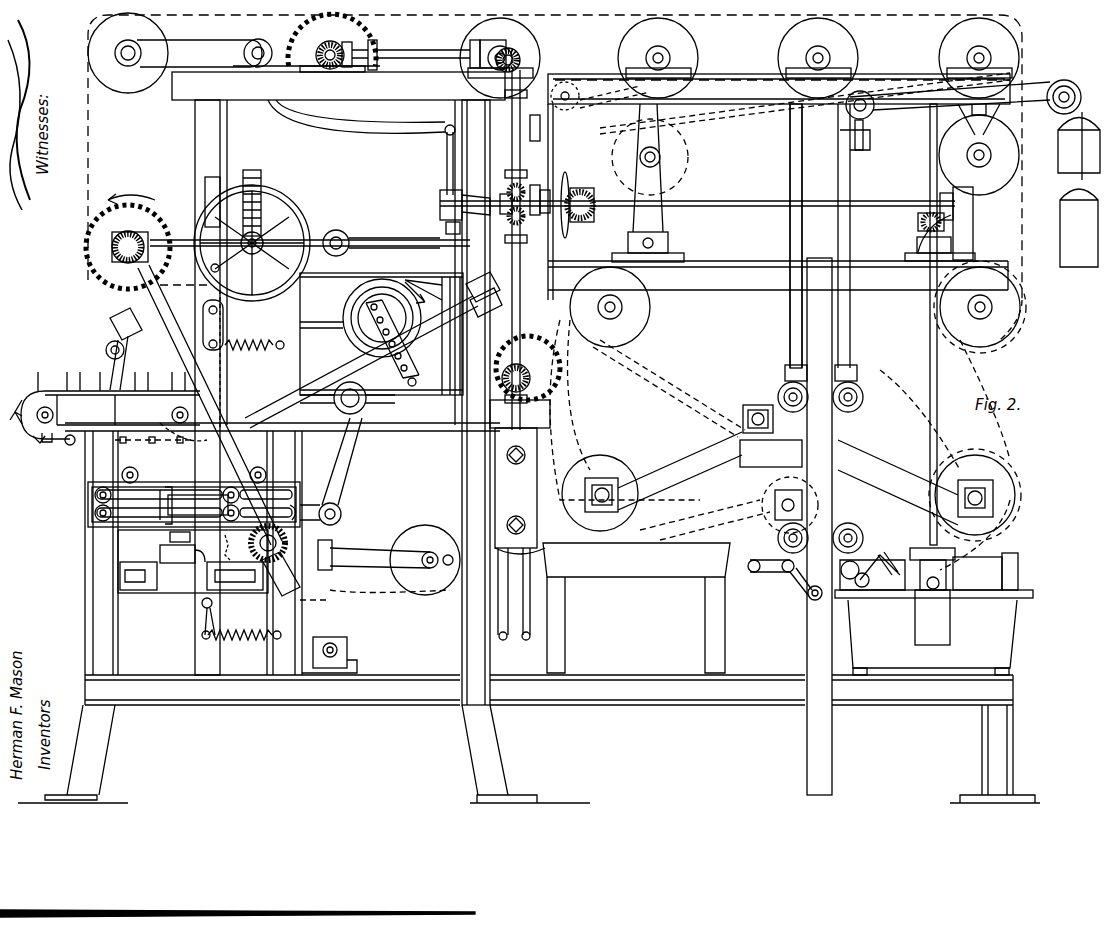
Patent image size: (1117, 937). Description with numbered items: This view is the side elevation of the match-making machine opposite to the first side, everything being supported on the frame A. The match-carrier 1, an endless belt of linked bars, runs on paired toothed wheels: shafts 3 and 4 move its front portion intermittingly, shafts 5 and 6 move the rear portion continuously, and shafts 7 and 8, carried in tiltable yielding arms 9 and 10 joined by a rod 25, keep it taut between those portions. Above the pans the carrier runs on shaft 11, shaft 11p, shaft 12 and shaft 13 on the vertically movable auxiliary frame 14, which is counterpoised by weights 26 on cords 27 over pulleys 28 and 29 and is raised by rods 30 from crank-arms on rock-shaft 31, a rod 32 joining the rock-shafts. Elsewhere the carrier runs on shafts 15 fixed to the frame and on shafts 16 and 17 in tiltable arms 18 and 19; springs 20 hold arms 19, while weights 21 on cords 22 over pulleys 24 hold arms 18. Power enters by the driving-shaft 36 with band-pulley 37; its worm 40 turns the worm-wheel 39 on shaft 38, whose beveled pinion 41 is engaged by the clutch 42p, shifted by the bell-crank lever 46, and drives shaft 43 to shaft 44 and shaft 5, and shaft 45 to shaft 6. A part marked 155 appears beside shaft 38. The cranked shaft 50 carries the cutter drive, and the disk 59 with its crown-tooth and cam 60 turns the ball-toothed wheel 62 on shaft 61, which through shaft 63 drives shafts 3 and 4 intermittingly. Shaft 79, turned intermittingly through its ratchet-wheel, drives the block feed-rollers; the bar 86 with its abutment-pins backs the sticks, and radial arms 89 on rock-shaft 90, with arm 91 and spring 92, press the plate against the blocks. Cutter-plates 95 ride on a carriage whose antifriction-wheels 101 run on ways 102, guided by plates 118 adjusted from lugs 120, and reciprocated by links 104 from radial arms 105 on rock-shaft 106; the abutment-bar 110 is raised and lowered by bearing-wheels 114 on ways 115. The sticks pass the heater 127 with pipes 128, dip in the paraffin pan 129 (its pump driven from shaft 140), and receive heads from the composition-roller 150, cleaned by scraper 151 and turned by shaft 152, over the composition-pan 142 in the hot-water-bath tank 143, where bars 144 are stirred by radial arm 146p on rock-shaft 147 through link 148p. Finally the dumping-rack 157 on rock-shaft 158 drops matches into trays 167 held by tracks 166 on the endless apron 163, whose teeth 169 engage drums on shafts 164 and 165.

The match-carrier 1 is at (110, 140).
The shaft 3 is at (140, 235).
The shaft 4 is at (250, 548).
The shaft 5 is at (330, 40).
The shaft 6 is at (530, 378).
The shaft 7 is at (130, 62).
The shaft 8 is at (428, 550).
The tiltable yielding arm 9 is at (204, 53).
The tiltable yielding arm 10 is at (355, 560).
The shaft 11 is at (600, 478).
The shaft 11p is at (775, 508).
The shaft 12 is at (978, 485).
The shaft 13 is at (756, 410).
The auxiliary vertically-movable frame 14 is at (710, 471).
The shaft 15 is at (500, 52).
The shaft 16 is at (642, 157).
The shaft 17 is at (205, 312).
The tiltable arm 18 is at (675, 185).
The tiltable arm 19 is at (212, 340).
The spring 20 is at (258, 352).
The weight 21 is at (1055, 165).
The cord 22 is at (590, 110).
The pulley 24 is at (566, 110).
The rod 25 is at (462, 475).
The weight 26 is at (1058, 230).
The cord 27 is at (852, 185).
The pulley 28 is at (870, 112).
The pulley 29 is at (1048, 112).
The rod 30 is at (790, 325).
The rock-shaft 31 is at (805, 113).
The rod 32 is at (870, 150).
The driving-shaft 36 is at (262, 250).
The band-pulley 37 is at (300, 205).
The shaft 38 is at (385, 222).
The worm-wheel 39 is at (262, 175).
The worm 40 is at (265, 238).
The beveled pinion 41 is at (490, 218).
The clutch 42p is at (435, 195).
The shaft 43 is at (510, 140).
The shaft 44 is at (420, 50).
The shaft 45 is at (522, 310).
The bell-crank lever 46 is at (446, 228).
The cranked shaft 50 is at (345, 238).
The disk 59 is at (345, 303).
The curved crown-tooth 60 is at (385, 290).
The shaft 61 is at (325, 378).
The ball-toothed wheel 62 is at (385, 343).
The shaft 63 is at (198, 375).
The shaft 79 is at (332, 643).
The bar 86 is at (160, 552).
The radial arm 89 is at (205, 562).
The rock-shaft 90 is at (200, 603).
The radial arm 91 is at (218, 612).
The spring 92 is at (241, 644).
The cutter-plate 95 is at (185, 545).
The antifriction-wheel 101 is at (95, 513).
The horizontal way 102 is at (297, 500).
The link 104 is at (333, 525).
The radial arm 105 is at (343, 480).
The rock-shaft 106 is at (355, 405).
The abutment-bar 110 is at (167, 537).
The bearing-wheel 114 is at (160, 490).
The way 115 is at (186, 492).
The plate 118 is at (258, 461).
The lug 120 is at (124, 472).
The heater 127 is at (516, 488).
The pipe 128 is at (514, 640).
The pan 129 is at (636, 608).
The shaft 140 is at (582, 188).
The composition-pan 142 is at (1020, 588).
The hot-water-bath tank 143 is at (934, 632).
The bar 144 is at (977, 573).
The radial arm 146p is at (795, 595).
The rock-shaft 147 is at (815, 600).
The link 148p is at (770, 574).
The composition-roller 150 is at (910, 553).
The scraper 151 is at (882, 550).
The shaft 152 is at (940, 420).
The rod 155 is at (345, 215).
The dumping-rack 157 is at (110, 327).
The rock-shaft 158 is at (106, 350).
The endless apron 163 is at (50, 442).
The shaft 164 is at (172, 412).
The shaft 165 is at (40, 406).
The recessed track 166 is at (32, 442).
The trough-like tray 167 is at (42, 372).
The boss or tooth 169 is at (70, 446).
The frame A is at (832, 728).